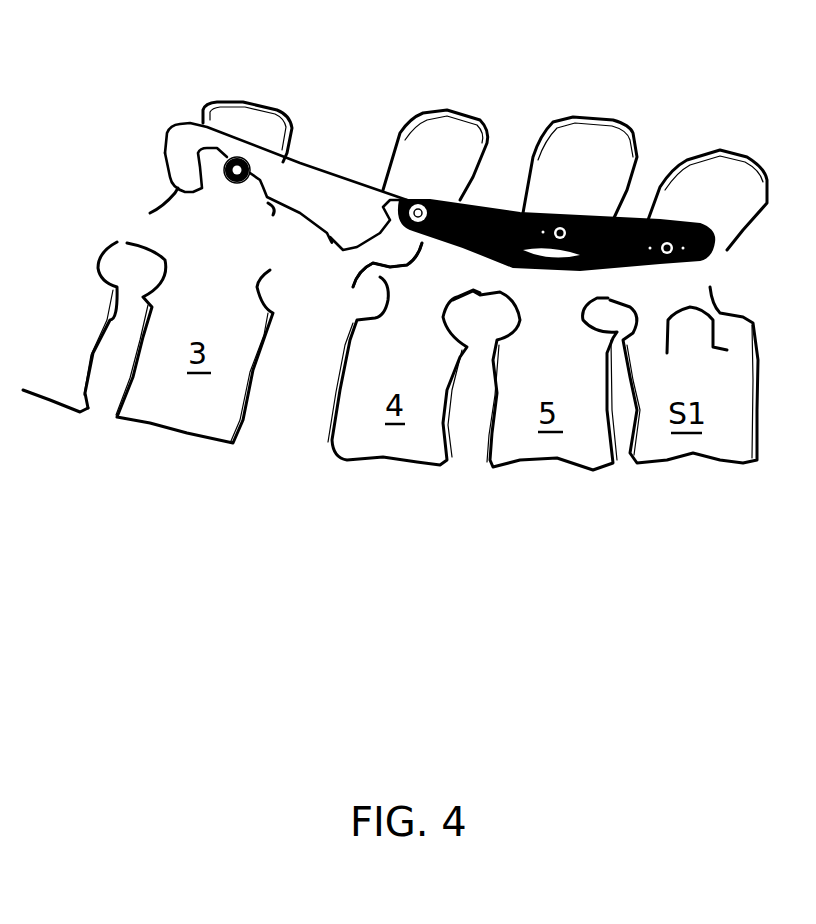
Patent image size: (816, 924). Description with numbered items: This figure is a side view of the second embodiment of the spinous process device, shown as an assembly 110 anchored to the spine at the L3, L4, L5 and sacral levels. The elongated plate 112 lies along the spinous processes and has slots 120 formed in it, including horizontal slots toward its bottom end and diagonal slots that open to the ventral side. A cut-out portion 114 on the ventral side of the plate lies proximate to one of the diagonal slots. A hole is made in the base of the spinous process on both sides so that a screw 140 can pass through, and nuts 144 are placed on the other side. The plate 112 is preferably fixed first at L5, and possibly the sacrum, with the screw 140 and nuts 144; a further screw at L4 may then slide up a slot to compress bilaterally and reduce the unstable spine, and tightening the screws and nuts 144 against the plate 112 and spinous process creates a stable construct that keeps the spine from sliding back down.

The spinal fixation system 110 is at (313, 100).
The plate 112 is at (340, 198).
The cut-out portion 114 is at (353, 292).
The slots 120 is at (545, 255).
The screw 140 is at (217, 180).
The nuts 144 is at (257, 177).